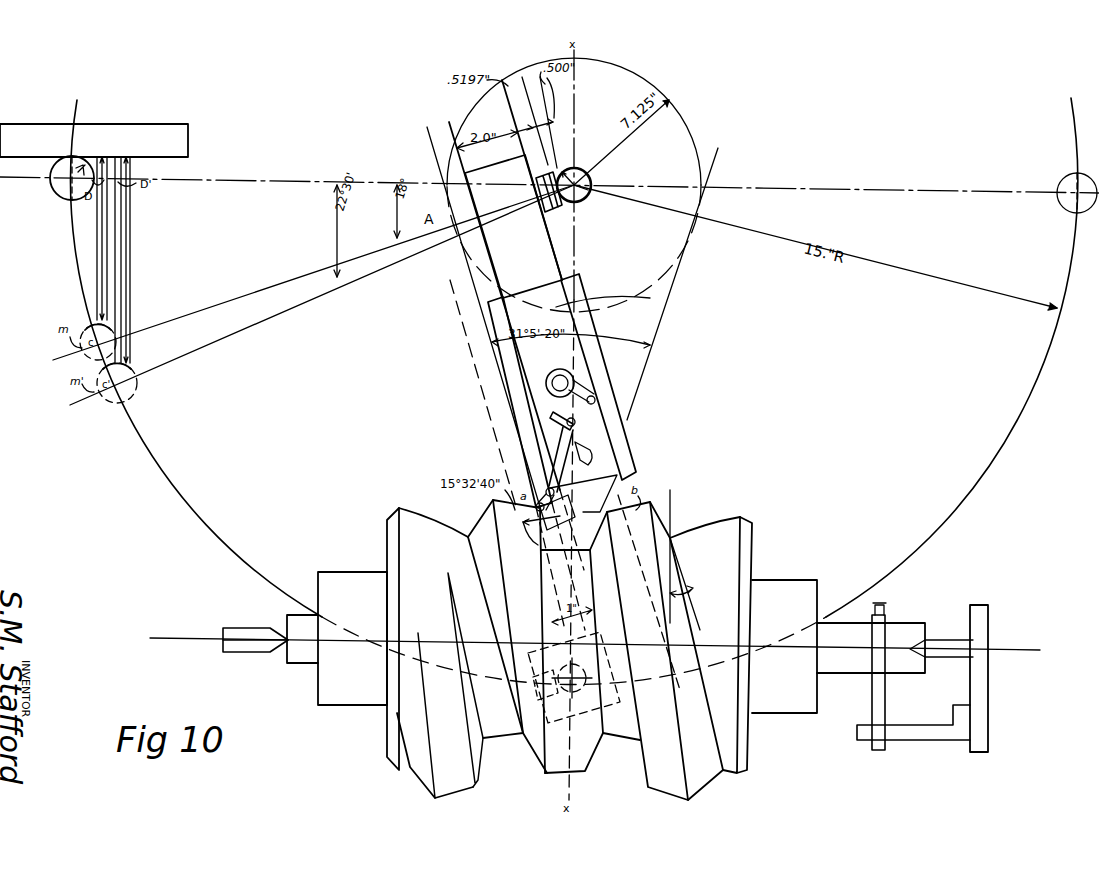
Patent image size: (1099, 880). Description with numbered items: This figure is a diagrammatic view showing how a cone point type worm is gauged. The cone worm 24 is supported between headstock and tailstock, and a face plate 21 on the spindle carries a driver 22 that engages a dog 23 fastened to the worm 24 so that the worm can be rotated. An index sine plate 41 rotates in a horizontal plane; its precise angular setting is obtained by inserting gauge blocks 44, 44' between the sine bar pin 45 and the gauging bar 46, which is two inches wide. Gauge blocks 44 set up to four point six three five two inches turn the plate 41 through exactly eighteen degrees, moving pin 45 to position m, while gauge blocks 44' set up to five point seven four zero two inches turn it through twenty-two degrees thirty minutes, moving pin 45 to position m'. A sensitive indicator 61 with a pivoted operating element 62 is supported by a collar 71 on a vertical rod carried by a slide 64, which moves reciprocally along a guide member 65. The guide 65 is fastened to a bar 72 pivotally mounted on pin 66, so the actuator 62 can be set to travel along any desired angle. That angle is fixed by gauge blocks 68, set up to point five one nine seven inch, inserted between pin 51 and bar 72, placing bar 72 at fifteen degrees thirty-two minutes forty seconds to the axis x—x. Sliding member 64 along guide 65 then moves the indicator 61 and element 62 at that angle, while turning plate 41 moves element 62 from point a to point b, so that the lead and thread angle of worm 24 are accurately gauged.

The face plate 21 is at (988, 628).
The driver 22 is at (940, 725).
The dog 23 is at (886, 689).
The cone worm 24 is at (430, 563).
The index sine plate 41 is at (828, 365).
The gauge blocks 44 is at (93, 238).
The gauge blocks 44' is at (141, 260).
The sine bar pin 45 is at (58, 184).
The gauging bar 46 is at (36, 150).
The pin 51 is at (582, 170).
The sensitive indicator 61 is at (568, 462).
The operating element 62 is at (546, 491).
The slide 64 is at (556, 299).
The guide member 65 is at (596, 328).
The pin 66 is at (566, 691).
The gauge blocks 68 is at (560, 212).
The collar 71 is at (556, 378).
The bar 72 is at (555, 252).